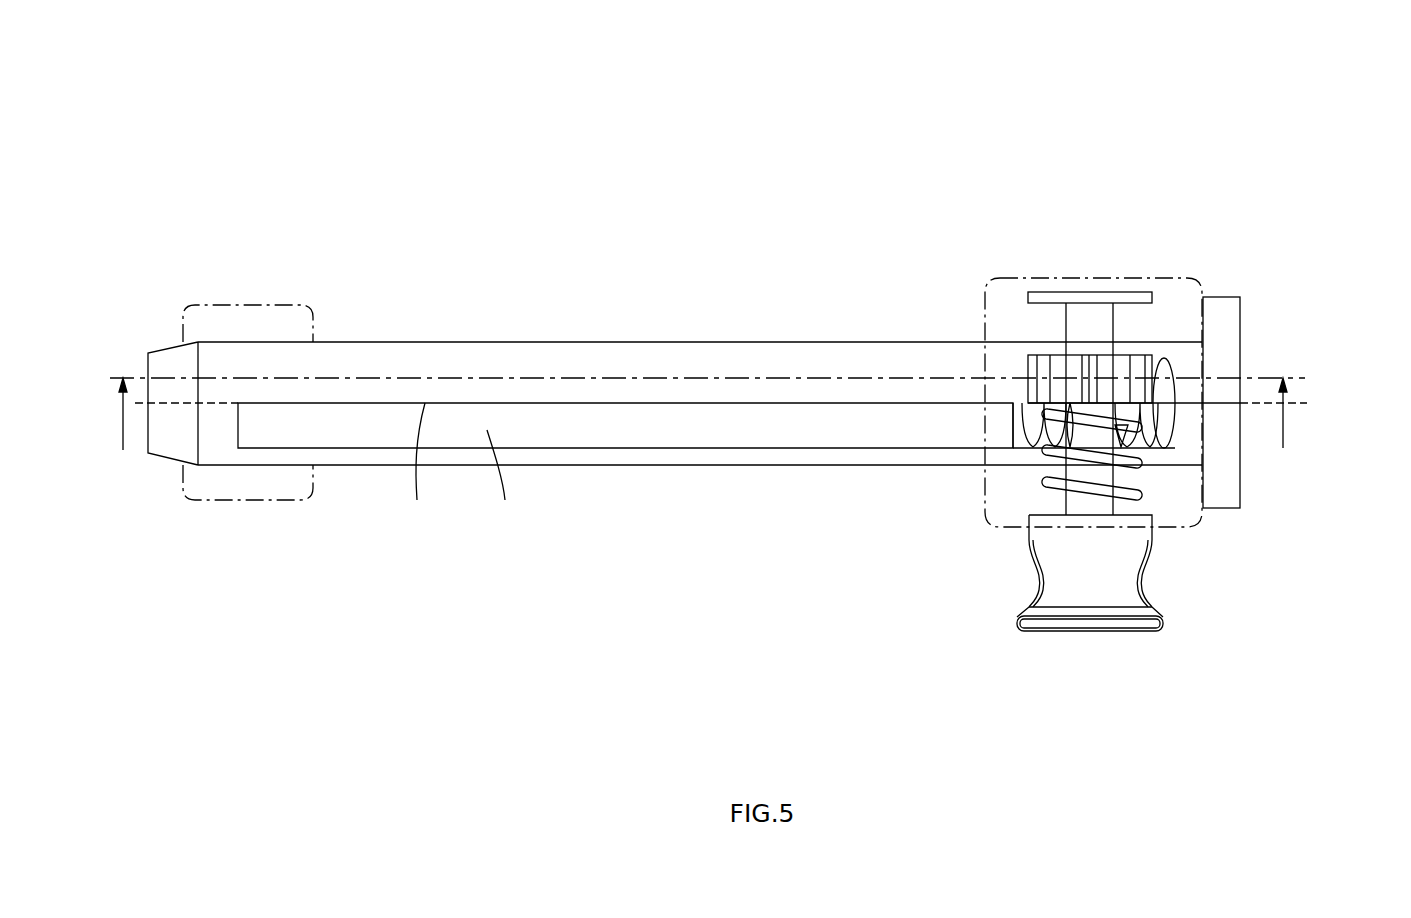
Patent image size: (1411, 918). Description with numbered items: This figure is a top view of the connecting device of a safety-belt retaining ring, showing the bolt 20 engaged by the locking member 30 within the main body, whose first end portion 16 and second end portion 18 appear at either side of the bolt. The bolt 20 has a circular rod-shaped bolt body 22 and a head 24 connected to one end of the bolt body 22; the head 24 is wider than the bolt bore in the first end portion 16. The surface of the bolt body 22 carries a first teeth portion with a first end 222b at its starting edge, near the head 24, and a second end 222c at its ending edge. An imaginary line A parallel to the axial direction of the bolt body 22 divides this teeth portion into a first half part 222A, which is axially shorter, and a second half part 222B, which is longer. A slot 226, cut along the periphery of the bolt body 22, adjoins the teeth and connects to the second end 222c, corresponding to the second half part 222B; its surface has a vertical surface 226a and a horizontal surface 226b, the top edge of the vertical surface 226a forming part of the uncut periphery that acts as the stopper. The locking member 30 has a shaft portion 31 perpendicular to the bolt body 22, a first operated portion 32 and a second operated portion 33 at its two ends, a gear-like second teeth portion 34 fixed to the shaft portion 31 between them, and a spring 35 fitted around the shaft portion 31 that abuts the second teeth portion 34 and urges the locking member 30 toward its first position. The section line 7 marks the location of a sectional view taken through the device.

The section line 7- 7 is at (703, 428).
The first end portion 16 is at (995, 278).
The second end portion 18 is at (205, 305).
The bolt 20 is at (697, 267).
The bolt body 22 is at (463, 342).
The head 24 is at (1205, 297).
The locking member 30 is at (1052, 650).
The shaft portion 31 is at (1105, 503).
The first operated portion 32 is at (1060, 292).
The second operated portion 33 is at (1123, 595).
The second teeth portion 34 is at (1138, 355).
The spring 35 is at (1045, 482).
The first half part 222A is at (1175, 400).
The second half part 222B is at (1175, 420).
The first end 222b is at (1175, 403).
The second end 222c is at (1013, 420).
The slot 226 is at (503, 602).
The vertical surface 226a is at (417, 500).
The horizontal surface 226b is at (505, 500).
The imaginary line A is at (1307, 403).